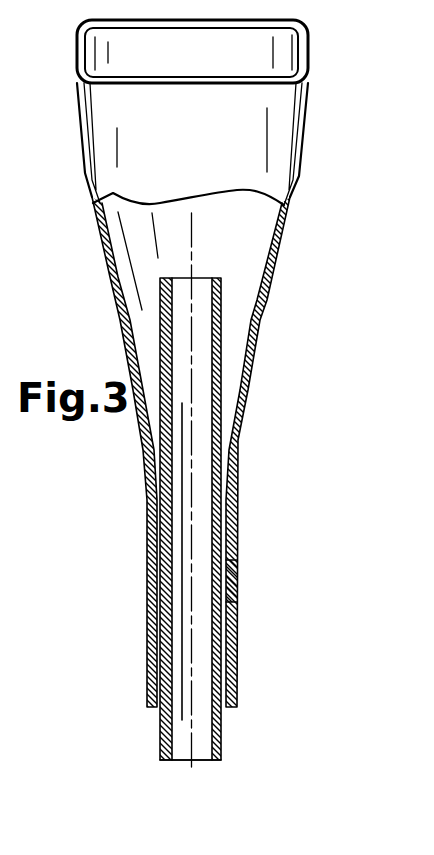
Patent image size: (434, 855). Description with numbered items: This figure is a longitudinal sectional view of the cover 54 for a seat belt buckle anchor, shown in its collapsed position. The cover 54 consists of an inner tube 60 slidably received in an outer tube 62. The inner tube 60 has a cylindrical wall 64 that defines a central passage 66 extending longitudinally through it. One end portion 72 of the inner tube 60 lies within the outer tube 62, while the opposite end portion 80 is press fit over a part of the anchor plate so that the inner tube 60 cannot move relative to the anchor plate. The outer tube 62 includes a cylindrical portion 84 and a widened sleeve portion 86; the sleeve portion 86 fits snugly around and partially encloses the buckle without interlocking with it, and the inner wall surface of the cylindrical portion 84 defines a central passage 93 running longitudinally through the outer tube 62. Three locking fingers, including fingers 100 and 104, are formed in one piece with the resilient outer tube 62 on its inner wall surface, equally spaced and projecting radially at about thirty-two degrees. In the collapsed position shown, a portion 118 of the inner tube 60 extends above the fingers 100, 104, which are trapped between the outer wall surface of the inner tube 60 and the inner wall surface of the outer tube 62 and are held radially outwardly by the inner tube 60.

The cover 54 is at (110, 687).
The sleeve portion 86 is at (298, 130).
The outer tube 62 is at (282, 260).
The end portion 72 is at (222, 311).
The central passage 66 is at (182, 522).
The portion 118 is at (222, 397).
The cylindrical wall 64 is at (222, 418).
The inner tube 60 is at (227, 442).
The central passage 93 is at (237, 543).
The locking finger 100 is at (233, 597).
The locking finger 104 is at (152, 607).
The cylindrical portion 84 is at (235, 663).
The end portion 80 is at (220, 730).